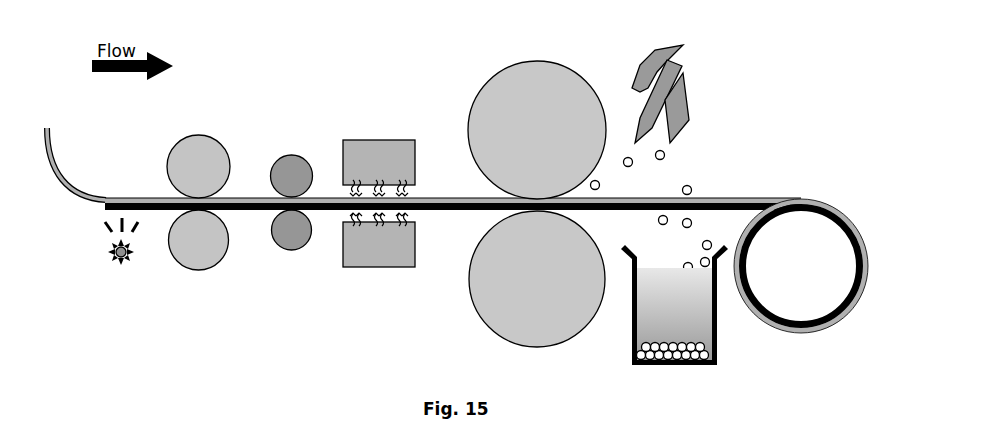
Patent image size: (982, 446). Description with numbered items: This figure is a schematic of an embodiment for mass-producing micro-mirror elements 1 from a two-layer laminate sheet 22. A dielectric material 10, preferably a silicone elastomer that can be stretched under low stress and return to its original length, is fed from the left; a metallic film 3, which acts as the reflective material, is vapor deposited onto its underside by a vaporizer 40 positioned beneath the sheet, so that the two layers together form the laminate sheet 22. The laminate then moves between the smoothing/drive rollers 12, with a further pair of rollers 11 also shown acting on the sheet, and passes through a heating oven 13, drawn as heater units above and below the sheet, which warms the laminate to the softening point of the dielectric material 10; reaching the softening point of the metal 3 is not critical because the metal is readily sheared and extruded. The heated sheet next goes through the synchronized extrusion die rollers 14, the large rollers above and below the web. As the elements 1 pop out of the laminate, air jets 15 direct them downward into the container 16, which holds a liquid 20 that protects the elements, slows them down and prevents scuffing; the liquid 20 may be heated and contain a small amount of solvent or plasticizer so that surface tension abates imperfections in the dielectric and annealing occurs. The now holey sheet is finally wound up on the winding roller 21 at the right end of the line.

The micro-mirror element 1 is at (653, 192).
The metallic film 3 is at (104, 206).
The dielectric material 10 is at (48, 130).
The pressing rollers 11 is at (211, 141).
The smoothing/drive rollers 12 is at (292, 158).
The heating oven 13 is at (370, 150).
The synchronized extrusion die rollers 14 is at (482, 90).
The air jets 15 is at (678, 62).
The container 16 is at (717, 355).
The liquid 20 is at (653, 303).
The winding roller 21 is at (805, 197).
The 2-layer laminate sheet 22 is at (148, 169).
The vaporizer 40 is at (107, 257).